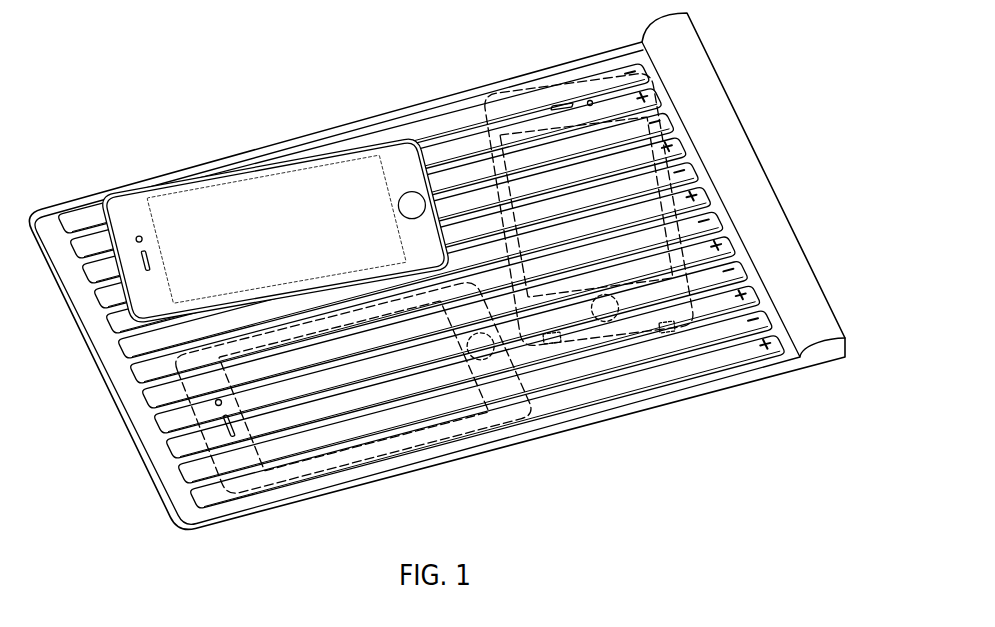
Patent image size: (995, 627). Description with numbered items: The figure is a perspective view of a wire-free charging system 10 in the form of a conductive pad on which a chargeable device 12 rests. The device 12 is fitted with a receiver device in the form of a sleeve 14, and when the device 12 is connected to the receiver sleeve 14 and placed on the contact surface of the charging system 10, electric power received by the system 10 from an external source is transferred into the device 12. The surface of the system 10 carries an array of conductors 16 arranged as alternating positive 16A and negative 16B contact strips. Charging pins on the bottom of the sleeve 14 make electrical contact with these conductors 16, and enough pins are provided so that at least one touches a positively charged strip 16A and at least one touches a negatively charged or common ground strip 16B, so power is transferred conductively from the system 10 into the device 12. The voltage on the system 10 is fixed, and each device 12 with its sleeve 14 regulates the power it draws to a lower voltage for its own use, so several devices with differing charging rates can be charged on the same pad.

The wireless charging system 10 is at (145, 104).
The chargeable device 12 is at (130, 208).
The receiver sleeve 14 is at (482, 103).
The array of conductors 16 is at (457, 286).
The positive contact strips 16A is at (768, 335).
The negative contact strips 16B is at (733, 263).